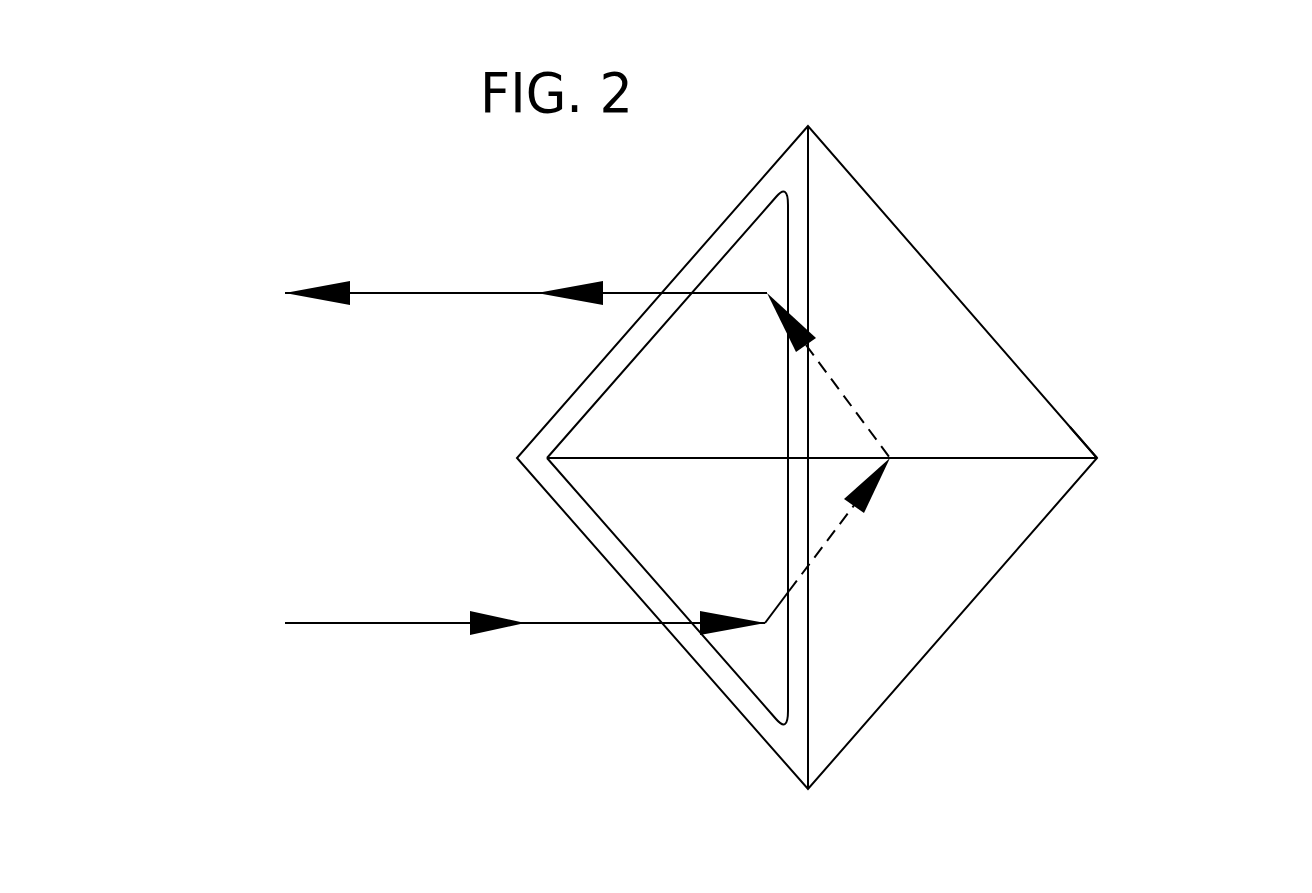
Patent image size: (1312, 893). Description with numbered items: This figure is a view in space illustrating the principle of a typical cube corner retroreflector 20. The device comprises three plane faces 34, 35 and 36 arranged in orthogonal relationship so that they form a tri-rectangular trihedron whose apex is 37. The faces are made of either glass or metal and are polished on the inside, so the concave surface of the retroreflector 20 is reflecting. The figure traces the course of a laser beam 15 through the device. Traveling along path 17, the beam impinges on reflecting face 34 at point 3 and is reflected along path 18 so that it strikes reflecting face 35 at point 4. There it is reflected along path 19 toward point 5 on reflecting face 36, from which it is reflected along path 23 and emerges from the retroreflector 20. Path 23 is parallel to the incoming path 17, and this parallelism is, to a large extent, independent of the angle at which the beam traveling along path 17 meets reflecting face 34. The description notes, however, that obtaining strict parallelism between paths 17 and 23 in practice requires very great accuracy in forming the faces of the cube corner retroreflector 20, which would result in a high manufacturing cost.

The cube corner retroreflector 20 is at (1122, 135).
The laser beam 15 is at (342, 682).
The path 17 is at (412, 623).
The path 23 is at (412, 293).
The point 3 is at (765, 623).
The point 5 is at (767, 293).
The plane face 34 is at (714, 533).
The plane face 35 is at (960, 537).
The plane face 36 is at (714, 410).
The apex 37 is at (1097, 458).
The point 4 is at (892, 458).
The path 18 is at (843, 527).
The path 19 is at (843, 394).